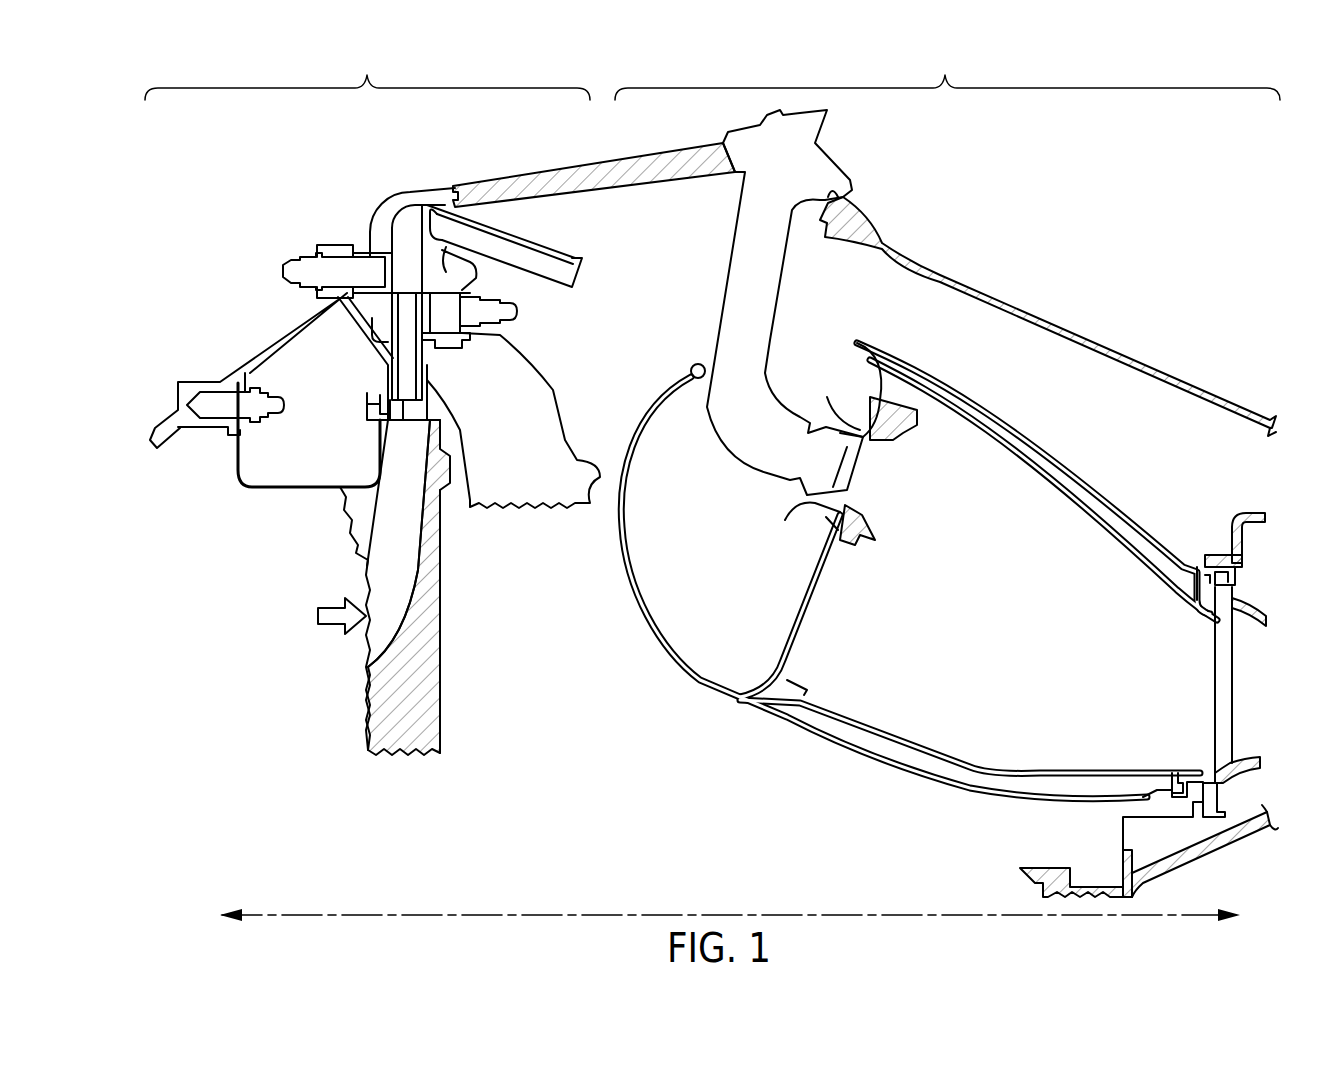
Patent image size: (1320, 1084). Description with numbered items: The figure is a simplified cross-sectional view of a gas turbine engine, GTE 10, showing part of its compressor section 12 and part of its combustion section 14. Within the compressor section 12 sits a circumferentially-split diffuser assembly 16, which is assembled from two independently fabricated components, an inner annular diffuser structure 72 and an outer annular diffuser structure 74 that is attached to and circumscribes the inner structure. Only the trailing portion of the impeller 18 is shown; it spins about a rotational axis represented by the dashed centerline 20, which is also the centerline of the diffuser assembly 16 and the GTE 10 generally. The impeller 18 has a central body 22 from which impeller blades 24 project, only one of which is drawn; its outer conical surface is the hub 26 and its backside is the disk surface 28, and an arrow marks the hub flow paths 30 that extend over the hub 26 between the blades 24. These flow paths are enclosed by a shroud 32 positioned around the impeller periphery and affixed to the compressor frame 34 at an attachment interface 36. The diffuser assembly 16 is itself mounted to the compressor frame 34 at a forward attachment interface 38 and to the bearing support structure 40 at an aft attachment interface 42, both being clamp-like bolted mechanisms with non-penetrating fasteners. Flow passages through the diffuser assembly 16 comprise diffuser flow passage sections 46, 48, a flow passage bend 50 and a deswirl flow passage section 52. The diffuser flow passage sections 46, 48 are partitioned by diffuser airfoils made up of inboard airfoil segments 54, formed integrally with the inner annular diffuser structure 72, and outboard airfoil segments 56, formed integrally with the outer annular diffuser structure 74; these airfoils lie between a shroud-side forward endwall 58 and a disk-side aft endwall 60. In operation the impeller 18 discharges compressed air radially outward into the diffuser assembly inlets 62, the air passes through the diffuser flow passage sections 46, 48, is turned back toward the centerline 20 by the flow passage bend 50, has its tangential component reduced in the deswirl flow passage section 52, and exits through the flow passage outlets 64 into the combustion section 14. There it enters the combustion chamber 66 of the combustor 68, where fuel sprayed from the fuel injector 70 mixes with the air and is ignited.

The gas turbine engine 10 is at (120, 735).
The compressor section 12 is at (367, 70).
The combustion section 14 is at (947, 70).
The circumferentially-split diffuser assembly 16 is at (243, 207).
The impeller 18 is at (366, 700).
The centerline 20 is at (300, 915).
The central body 22 is at (417, 720).
The impeller blades 24 is at (382, 578).
The hub 26 is at (418, 573).
The disk surface 28 is at (440, 645).
The hub flow paths 30 is at (318, 616).
The shroud 32 is at (345, 487).
The compressor frame 34 is at (233, 360).
The attachment interface 36 is at (210, 420).
The forward attachment interface 38 is at (322, 253).
The bearing support structure 40 is at (557, 390).
The aft attachment interface 42 is at (497, 312).
The diffuser flow passage section 46 is at (420, 349).
The diffuser flow passage section 48 is at (400, 268).
The flow passage bend 50 is at (400, 199).
The deswirl flow passage section 52 is at (552, 256).
The inboard airfoil segments 54 is at (405, 360).
The outboard airfoil segments 56 is at (402, 272).
The forward endwall 58 is at (385, 325).
The aft endwall 60 is at (430, 367).
The diffuser assembly inlets 62 is at (403, 418).
The flow passage outlets 64 is at (570, 263).
The combustion chamber 66 is at (970, 643).
The combustor 68 is at (975, 392).
The fuel injector 70 is at (780, 258).
The inner annular diffuser structure 72 is at (378, 393).
The outer annular diffuser structure 74 is at (438, 188).